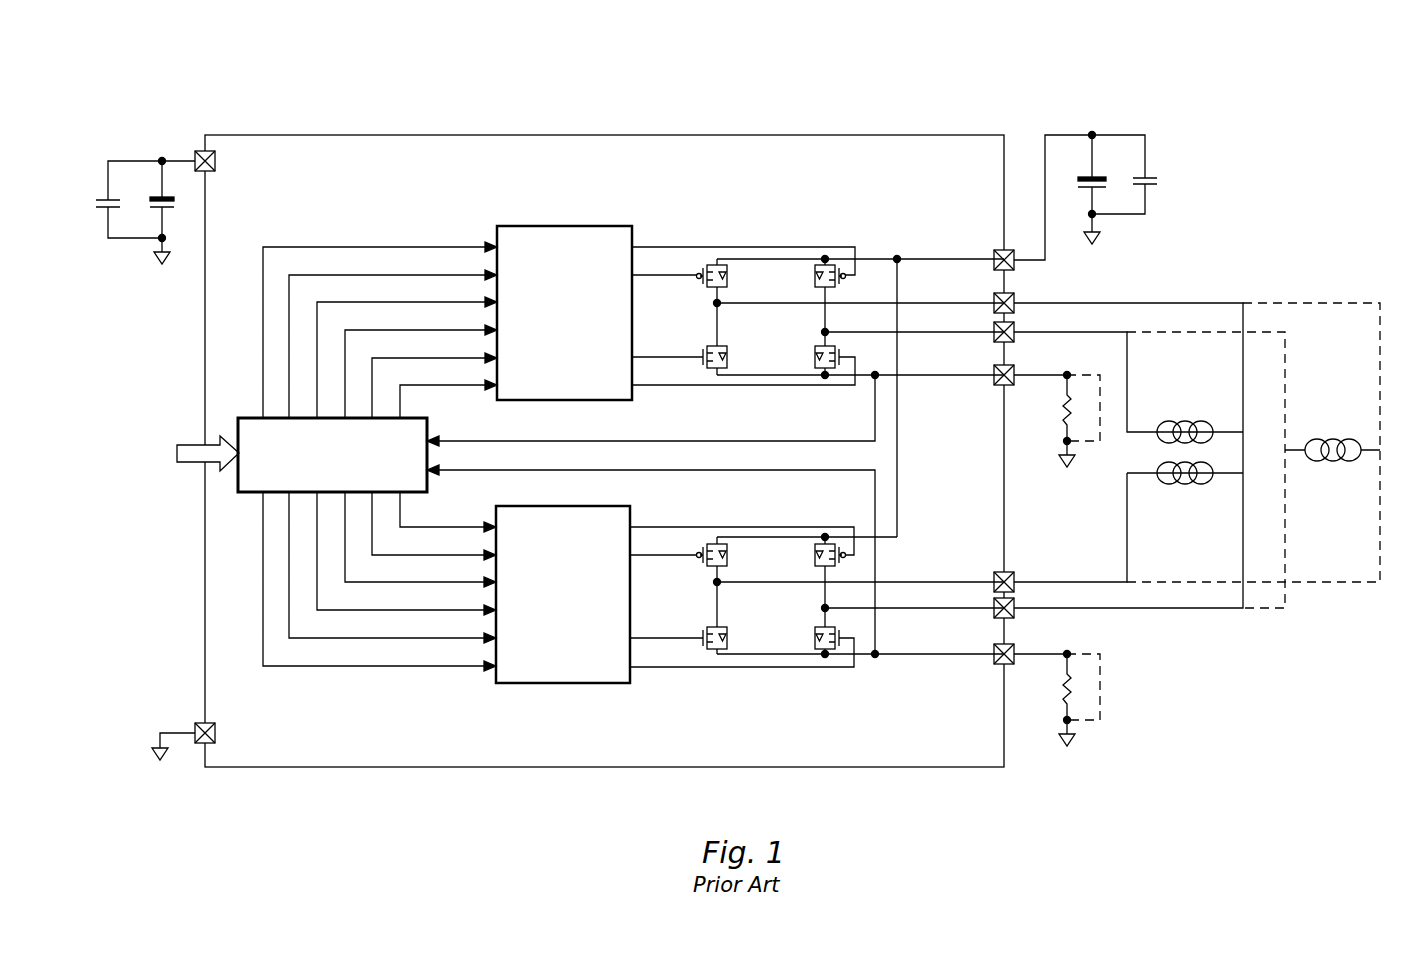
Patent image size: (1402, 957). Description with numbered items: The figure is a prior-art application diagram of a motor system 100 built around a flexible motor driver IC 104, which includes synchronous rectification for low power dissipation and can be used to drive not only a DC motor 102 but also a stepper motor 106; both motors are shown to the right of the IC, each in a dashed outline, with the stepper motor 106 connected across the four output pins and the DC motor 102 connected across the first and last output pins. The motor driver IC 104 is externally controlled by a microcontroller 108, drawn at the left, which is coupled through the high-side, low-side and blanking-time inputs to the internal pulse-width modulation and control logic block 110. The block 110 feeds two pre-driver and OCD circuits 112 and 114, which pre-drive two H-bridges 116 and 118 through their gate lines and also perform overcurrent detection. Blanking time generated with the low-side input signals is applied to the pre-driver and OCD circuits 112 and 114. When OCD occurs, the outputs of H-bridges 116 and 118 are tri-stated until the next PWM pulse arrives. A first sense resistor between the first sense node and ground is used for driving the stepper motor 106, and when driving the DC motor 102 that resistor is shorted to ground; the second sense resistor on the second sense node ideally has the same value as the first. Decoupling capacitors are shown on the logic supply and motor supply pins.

The motor system 100 is at (205, 91).
The DC motor 102 is at (1349, 440).
The motor driver IC 104 is at (1004, 752).
The stepper motor 106 is at (1212, 441).
The μC 108 is at (193, 440).
The pulse-width modulation and control logic block 110 is at (412, 418).
The pre-driver and OCD circuit 112 is at (572, 226).
The pre-driver and OCD circuit 114 is at (572, 683).
The H-bridge 116 is at (806, 241).
The H-bridge 118 is at (758, 678).